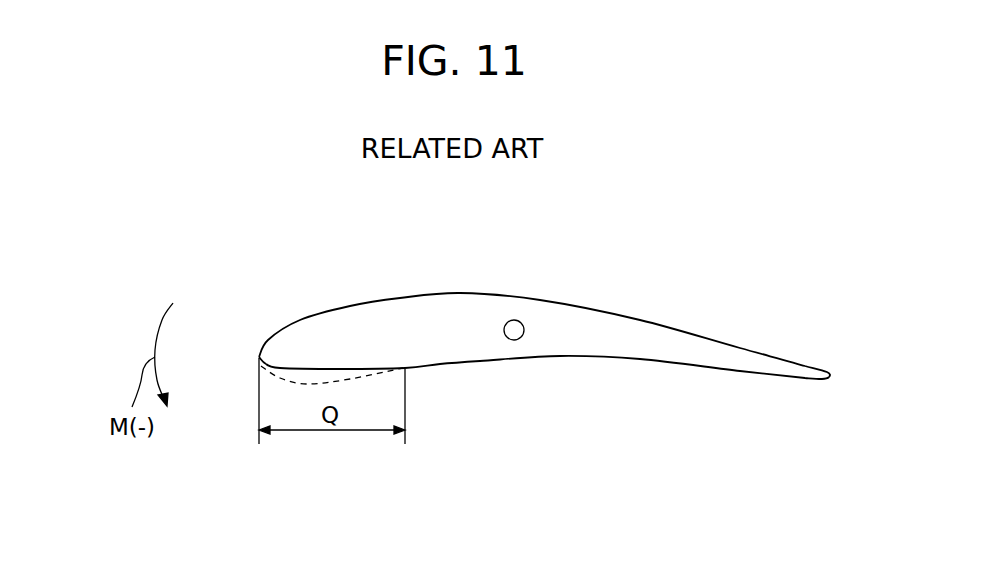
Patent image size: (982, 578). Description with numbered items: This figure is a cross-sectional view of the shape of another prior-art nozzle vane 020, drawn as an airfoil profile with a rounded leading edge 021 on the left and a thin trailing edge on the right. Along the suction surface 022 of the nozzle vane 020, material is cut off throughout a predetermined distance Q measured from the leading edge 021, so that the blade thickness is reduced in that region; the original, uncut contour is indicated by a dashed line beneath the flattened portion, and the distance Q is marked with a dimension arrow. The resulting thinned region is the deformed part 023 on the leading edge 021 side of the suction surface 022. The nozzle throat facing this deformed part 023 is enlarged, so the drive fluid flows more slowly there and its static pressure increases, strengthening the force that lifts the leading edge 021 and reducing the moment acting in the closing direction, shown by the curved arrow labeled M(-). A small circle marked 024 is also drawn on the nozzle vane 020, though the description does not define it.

The nozzle vane 020 is at (488, 297).
The leading edge 021 is at (258, 356).
The suction surface 022 is at (547, 359).
The deformed part 023 is at (311, 364).
The center of gravity / reference point 024 is at (505, 337).